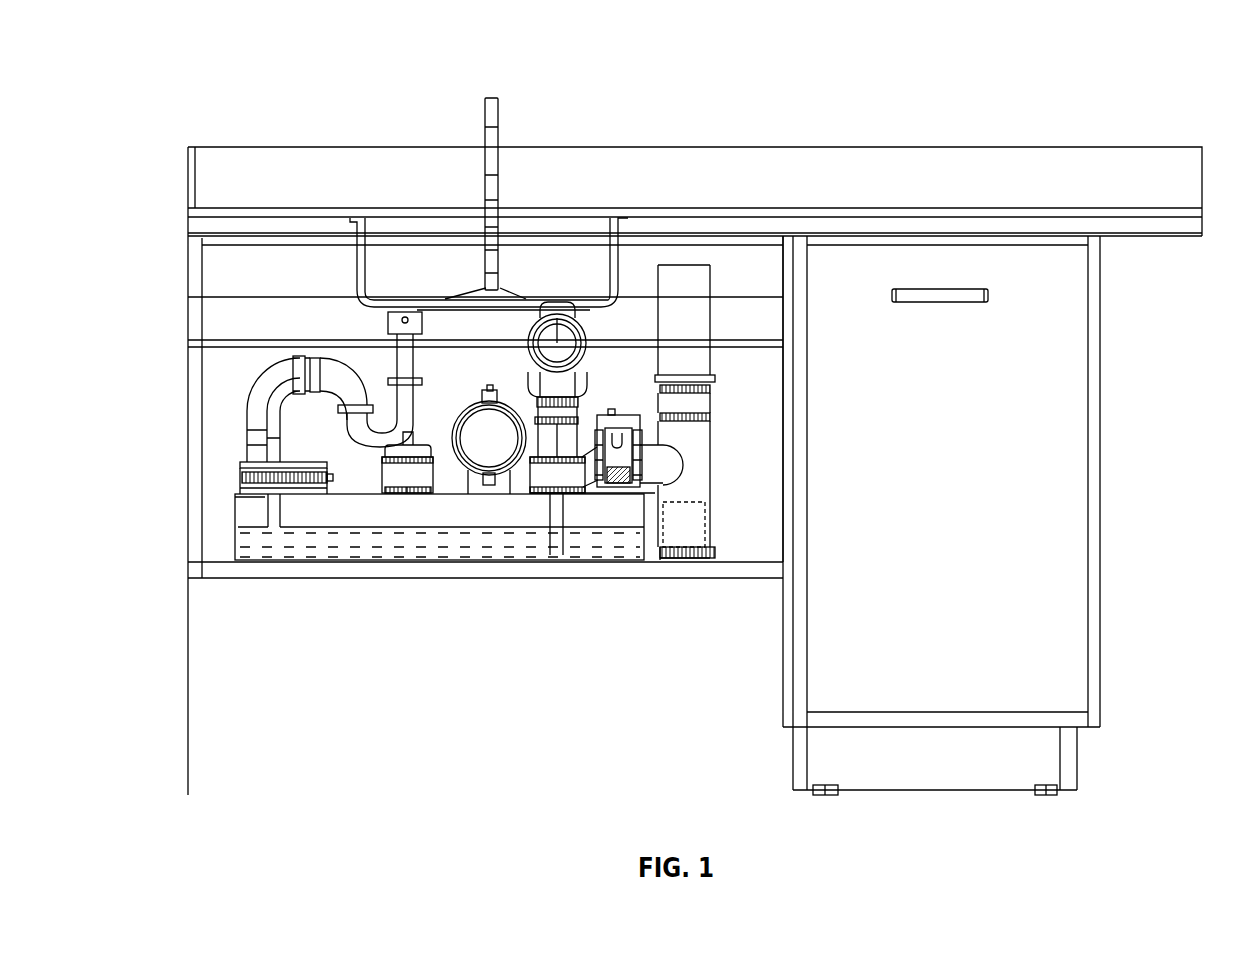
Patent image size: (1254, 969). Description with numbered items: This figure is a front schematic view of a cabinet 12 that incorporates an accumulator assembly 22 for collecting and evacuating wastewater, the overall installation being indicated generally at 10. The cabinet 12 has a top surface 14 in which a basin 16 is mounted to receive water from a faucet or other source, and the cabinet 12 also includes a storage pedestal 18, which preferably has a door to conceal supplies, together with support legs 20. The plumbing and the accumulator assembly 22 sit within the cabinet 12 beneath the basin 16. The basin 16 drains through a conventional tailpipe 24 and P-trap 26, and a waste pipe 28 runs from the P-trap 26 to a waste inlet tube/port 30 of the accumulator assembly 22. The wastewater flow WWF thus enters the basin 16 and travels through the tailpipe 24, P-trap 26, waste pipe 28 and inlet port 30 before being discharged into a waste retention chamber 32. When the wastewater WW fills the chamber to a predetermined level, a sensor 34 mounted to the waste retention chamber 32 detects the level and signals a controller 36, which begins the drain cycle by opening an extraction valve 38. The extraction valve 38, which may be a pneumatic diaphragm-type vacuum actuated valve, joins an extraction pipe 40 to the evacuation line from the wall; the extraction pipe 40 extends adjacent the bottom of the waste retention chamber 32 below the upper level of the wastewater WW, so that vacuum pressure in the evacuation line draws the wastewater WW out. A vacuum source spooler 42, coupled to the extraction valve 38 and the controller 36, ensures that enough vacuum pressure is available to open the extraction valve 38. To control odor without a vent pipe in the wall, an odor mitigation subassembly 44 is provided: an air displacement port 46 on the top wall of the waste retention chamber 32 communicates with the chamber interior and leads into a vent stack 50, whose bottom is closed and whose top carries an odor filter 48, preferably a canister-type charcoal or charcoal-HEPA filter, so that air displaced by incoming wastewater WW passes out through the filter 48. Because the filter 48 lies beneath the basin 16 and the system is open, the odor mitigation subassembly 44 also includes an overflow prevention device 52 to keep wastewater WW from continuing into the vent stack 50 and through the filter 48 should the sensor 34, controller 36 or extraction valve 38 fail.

The water recycling system 10 is at (1158, 98).
The cabinet 12 is at (184, 212).
The top surface 14 is at (745, 207).
The basin 16 is at (367, 258).
The storage pedestal 18 is at (1070, 413).
The support legs 20 is at (196, 357).
The accumulator assembly 22 is at (232, 537).
The tailpipe 24 is at (407, 350).
The P-trap 26 is at (365, 425).
The waste pipe 28 is at (275, 380).
The waste inlet tube/port 30 is at (248, 457).
The waste retention chamber 32 is at (237, 513).
The sensor 34 is at (400, 480).
The controller 36 is at (635, 428).
The extraction valve 38 is at (574, 334).
The extraction pipe 40 is at (552, 555).
The vacuum source spooler 42 is at (493, 418).
The odor mitigation subassembly 44 is at (748, 359).
The air displacement port 46 is at (660, 453).
The odor filter 48 is at (692, 285).
The vent stack 50 is at (693, 492).
The overflow prevention device 52 is at (697, 402).
The wastewater WW is at (358, 552).
The wastewater flow WWF is at (503, 117).